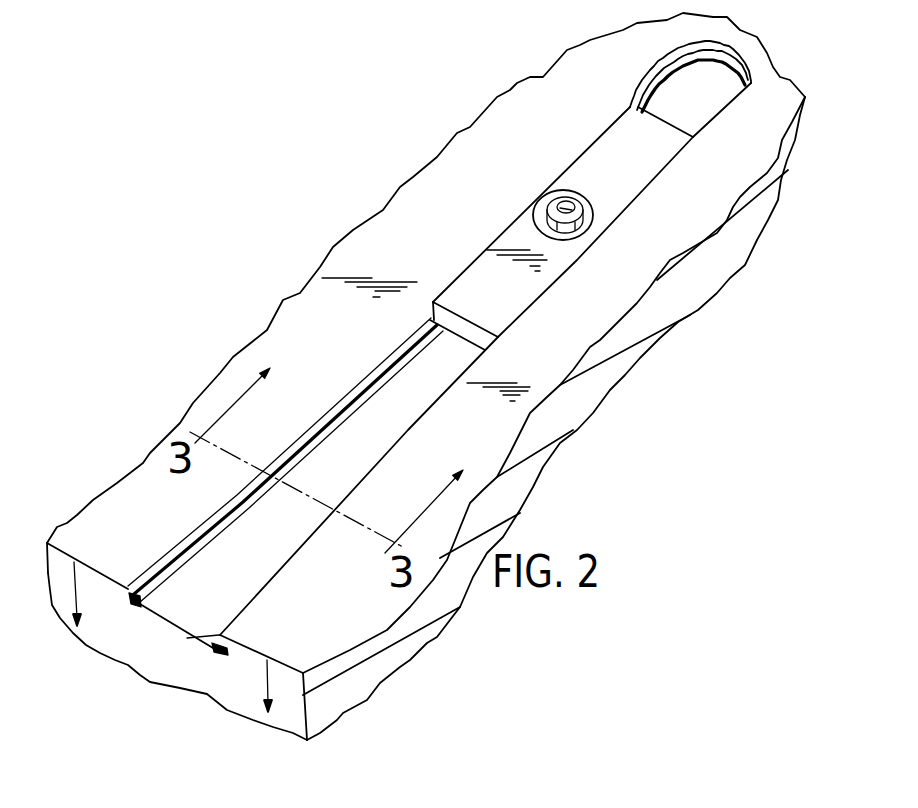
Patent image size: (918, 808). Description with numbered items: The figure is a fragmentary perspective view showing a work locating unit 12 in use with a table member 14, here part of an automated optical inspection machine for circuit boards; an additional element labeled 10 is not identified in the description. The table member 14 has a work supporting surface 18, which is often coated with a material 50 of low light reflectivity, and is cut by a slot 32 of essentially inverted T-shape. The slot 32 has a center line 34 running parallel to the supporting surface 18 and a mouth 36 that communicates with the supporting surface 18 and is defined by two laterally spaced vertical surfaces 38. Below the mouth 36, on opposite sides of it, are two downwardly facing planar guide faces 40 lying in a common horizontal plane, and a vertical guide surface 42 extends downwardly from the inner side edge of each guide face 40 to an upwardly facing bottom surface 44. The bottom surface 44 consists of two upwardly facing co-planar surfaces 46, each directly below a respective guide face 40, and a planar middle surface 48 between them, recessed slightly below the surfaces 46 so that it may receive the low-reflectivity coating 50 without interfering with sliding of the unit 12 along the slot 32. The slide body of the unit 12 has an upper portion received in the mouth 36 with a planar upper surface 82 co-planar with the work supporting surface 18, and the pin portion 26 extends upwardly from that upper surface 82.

The workpiece 10 is at (288, 509).
The work locating unit 12 is at (645, 186).
The table member 14 is at (520, 103).
The work supporting surface 18 is at (790, 88).
The pin portion 26 is at (585, 203).
The slot 32 is at (386, 361).
The center line 34 is at (122, 655).
The mouth 36 is at (669, 92).
The vertical surfaces 38 is at (213, 527).
The downwardly facing planar guide faces 40 is at (131, 588).
The vertical guide surface 42 is at (130, 600).
The bottom surface 44 is at (290, 515).
The upwardly facing co-planar surfaces 46 is at (137, 607).
The planar middle surface 48 is at (170, 630).
The layer of material of low light reflectivity 50 is at (205, 625).
The planar upper surface 82 is at (475, 272).